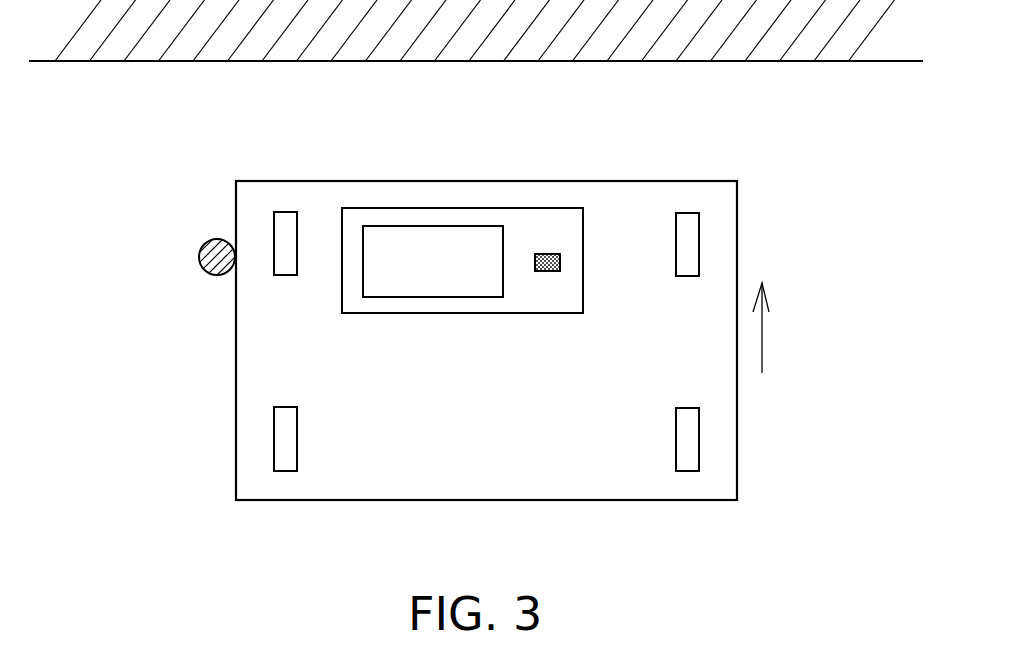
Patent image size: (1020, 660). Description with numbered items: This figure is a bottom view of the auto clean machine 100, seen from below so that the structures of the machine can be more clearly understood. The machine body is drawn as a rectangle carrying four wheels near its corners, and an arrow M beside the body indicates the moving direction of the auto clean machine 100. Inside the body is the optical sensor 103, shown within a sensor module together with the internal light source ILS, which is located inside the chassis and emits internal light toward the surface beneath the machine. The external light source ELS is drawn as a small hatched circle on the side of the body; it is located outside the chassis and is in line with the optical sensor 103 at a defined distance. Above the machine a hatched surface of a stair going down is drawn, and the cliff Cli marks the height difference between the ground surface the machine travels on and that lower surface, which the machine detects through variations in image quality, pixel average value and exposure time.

The auto clean machine 100 is at (488, 181).
The optical sensor 103 is at (435, 297).
The external light source ELS is at (217, 275).
The internal light source ILS is at (560, 263).
The cliff Cli is at (818, 61).
The moving direction M is at (774, 328).